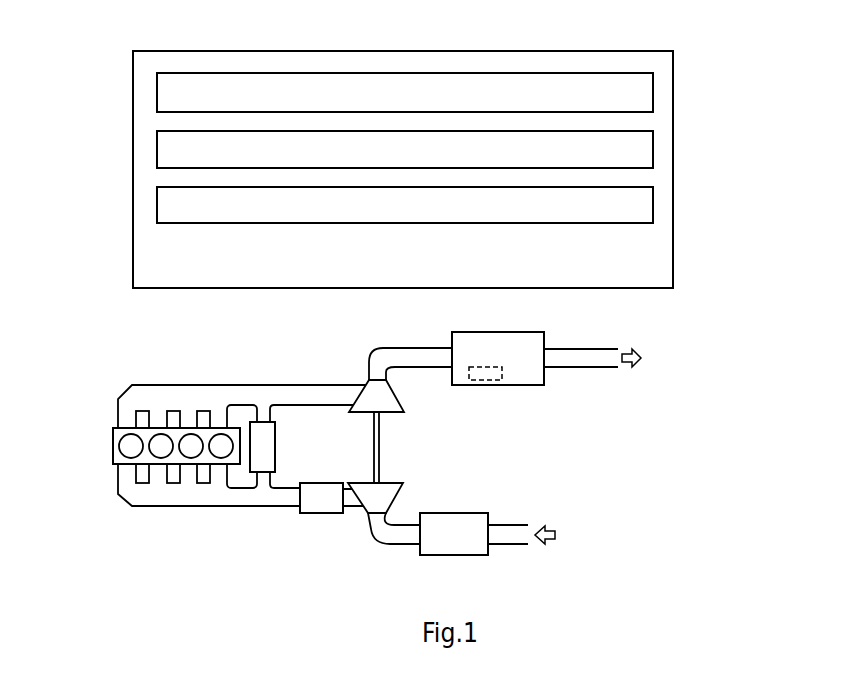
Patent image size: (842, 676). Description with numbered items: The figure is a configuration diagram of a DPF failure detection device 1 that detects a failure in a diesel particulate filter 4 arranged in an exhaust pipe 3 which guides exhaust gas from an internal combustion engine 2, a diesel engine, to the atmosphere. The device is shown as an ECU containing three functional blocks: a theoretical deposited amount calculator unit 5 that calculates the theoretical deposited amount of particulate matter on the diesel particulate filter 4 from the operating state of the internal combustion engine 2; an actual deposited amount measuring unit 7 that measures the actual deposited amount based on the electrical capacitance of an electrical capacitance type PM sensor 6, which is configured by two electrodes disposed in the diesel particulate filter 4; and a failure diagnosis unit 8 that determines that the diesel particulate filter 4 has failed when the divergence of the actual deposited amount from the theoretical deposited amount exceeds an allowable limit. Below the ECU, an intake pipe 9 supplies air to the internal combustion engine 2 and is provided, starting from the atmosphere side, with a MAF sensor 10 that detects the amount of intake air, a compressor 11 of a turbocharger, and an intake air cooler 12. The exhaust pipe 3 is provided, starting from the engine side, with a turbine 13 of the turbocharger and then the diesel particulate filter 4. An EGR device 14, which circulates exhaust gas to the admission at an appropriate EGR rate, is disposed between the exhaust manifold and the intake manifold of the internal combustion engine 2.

The DPF failure detection device 1 is at (97, 130).
The internal combustion engine 2 is at (112, 431).
The exhaust pipe 3 is at (573, 367).
The diesel particulate filter 4 is at (507, 385).
The theoretical deposited amount calculator unit 5 is at (653, 96).
The electrical capacitance type PM sensor 6 is at (478, 380).
The actual deposited amount measuring unit 7 is at (653, 151).
The failure diagnosis unit 8 is at (653, 206).
The intake pipe 9 is at (508, 545).
The MAF sensor 10 is at (458, 555).
The compressor 11 is at (395, 493).
The intake air cooler 12 is at (330, 513).
The turbine 13 is at (390, 415).
The EGR device 14 is at (276, 447).